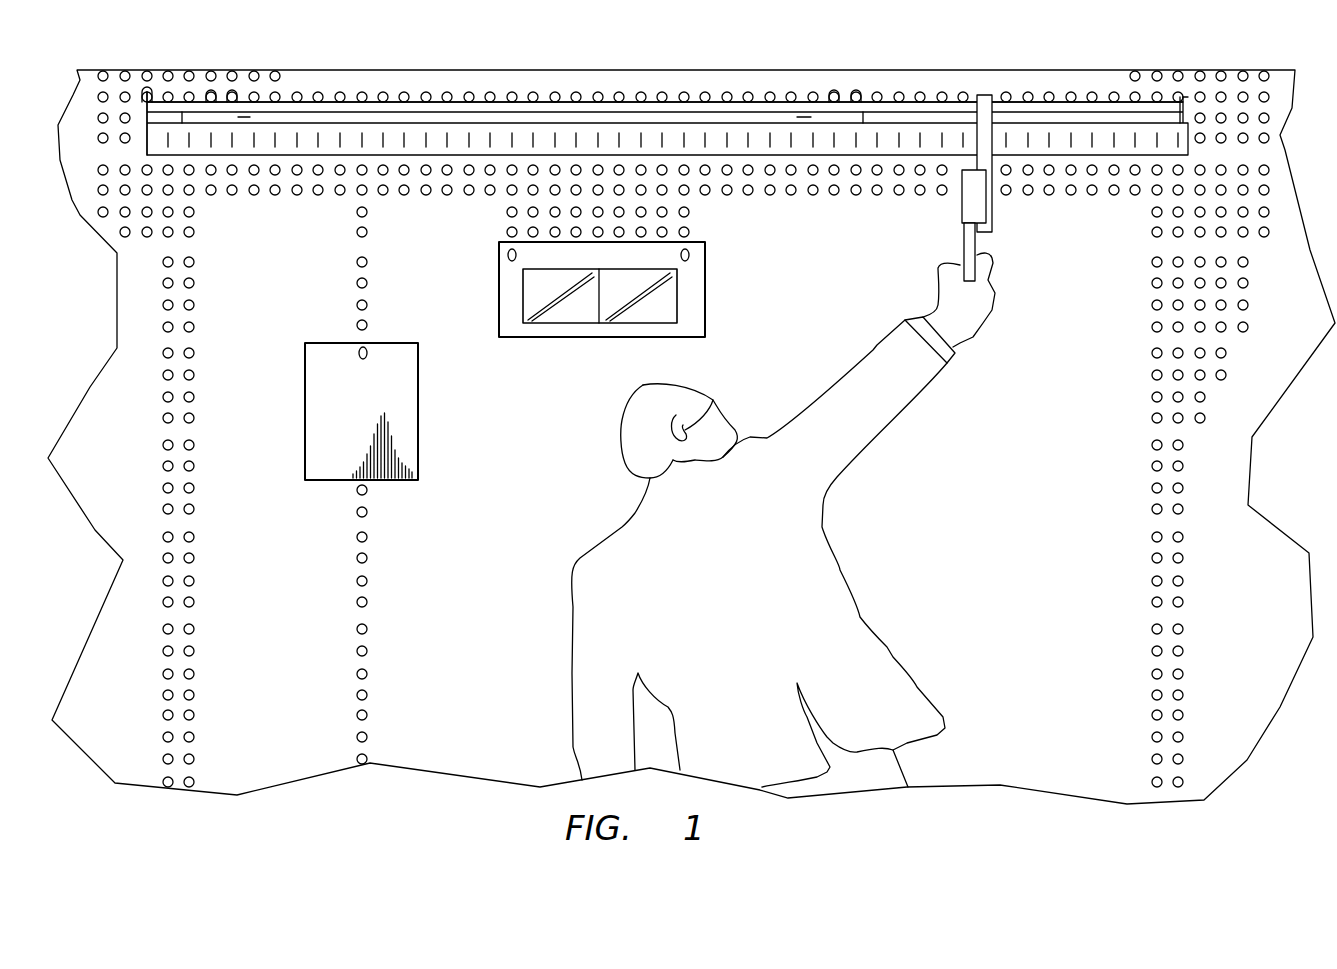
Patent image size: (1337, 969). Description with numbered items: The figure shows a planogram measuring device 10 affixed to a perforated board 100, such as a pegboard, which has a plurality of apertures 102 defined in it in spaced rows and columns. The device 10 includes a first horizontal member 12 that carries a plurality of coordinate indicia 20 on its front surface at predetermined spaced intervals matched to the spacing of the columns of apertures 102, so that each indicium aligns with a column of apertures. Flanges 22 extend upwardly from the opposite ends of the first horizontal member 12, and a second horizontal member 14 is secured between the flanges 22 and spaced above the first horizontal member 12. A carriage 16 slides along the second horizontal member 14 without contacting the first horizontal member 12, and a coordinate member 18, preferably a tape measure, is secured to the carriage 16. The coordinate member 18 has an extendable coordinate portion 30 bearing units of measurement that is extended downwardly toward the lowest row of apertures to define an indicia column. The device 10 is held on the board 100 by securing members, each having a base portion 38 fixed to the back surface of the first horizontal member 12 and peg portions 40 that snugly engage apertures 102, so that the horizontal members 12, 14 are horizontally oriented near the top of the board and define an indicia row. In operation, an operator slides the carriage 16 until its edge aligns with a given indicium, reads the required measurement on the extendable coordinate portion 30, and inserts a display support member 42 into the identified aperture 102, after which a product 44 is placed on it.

The planogram measuring device 10 is at (928, 75).
The first horizontal member 12 is at (435, 137).
The second horizontal member 14 is at (583, 112).
The carriage 16 is at (983, 110).
The coordinate member 18 is at (977, 210).
The coordinate indicia 20 is at (340, 137).
The flanges 22 is at (150, 97).
The extendable coordinate portion 30 is at (963, 240).
The base portion 38 is at (240, 117).
The peg portion 40 is at (233, 96).
The display support member 42 is at (689, 255).
The product 44 is at (642, 300).
The perforated board 100 is at (270, 443).
The apertures 102 is at (662, 95).